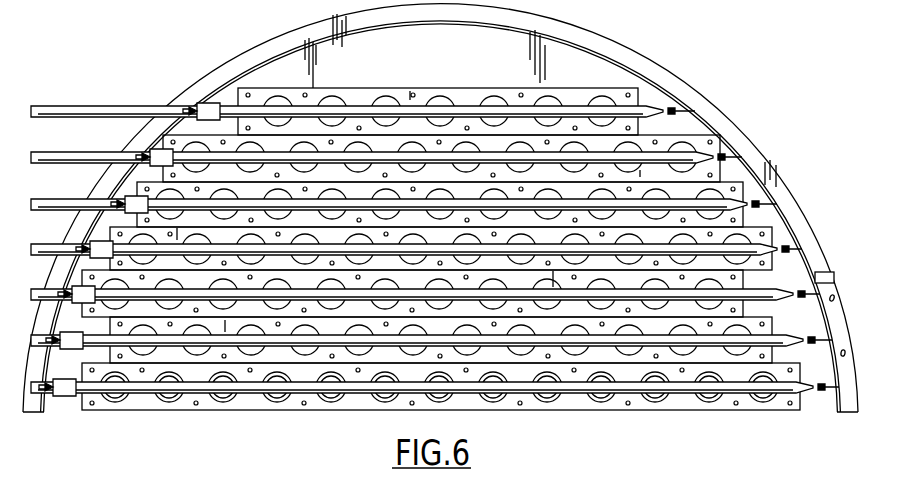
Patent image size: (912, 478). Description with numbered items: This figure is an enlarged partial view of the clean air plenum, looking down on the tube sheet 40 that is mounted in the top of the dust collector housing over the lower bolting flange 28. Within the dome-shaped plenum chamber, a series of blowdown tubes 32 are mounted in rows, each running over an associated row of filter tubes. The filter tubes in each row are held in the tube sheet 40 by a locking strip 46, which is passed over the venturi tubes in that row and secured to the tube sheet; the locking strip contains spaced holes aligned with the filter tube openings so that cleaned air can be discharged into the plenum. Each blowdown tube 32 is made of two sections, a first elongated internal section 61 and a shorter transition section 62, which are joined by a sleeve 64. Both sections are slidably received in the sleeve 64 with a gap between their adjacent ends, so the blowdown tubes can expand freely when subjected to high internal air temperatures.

The bolting flange 28 is at (248, 52).
The tube sheet 40 is at (550, 58).
The locking strip 46 is at (465, 84).
The blowdown tube 32 is at (579, 98).
The elongated internal section 61 is at (350, 110).
The transition section 62 is at (83, 112).
The sleeve 64 is at (213, 103).